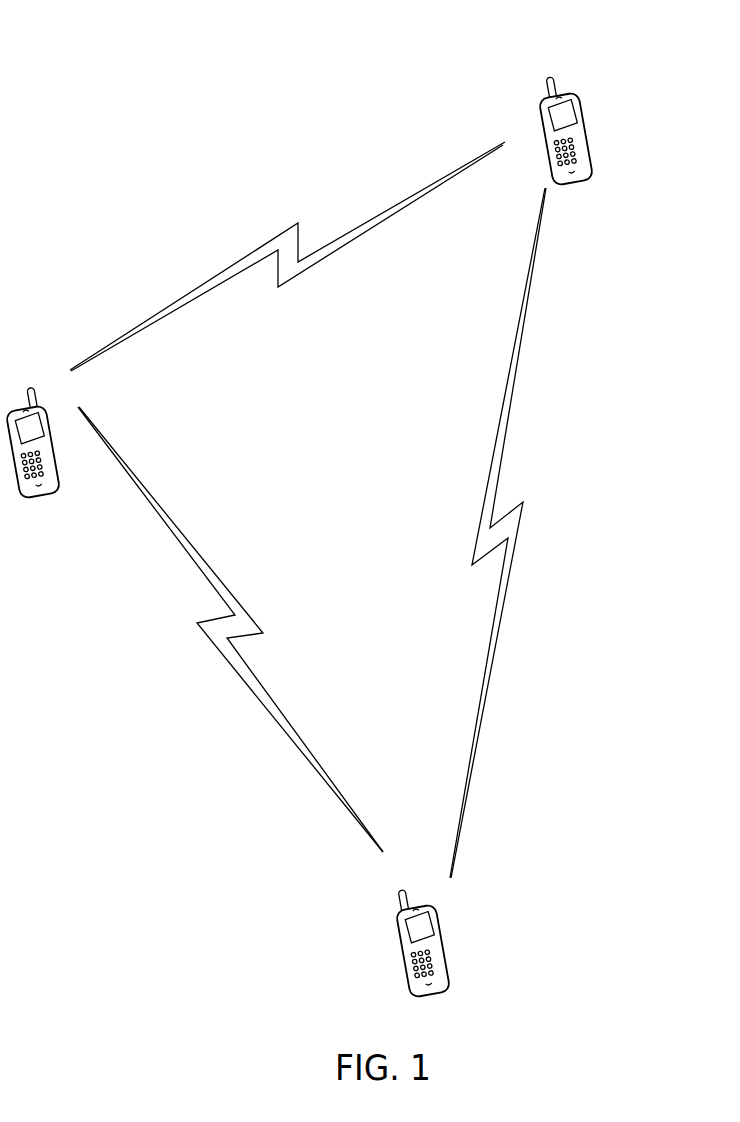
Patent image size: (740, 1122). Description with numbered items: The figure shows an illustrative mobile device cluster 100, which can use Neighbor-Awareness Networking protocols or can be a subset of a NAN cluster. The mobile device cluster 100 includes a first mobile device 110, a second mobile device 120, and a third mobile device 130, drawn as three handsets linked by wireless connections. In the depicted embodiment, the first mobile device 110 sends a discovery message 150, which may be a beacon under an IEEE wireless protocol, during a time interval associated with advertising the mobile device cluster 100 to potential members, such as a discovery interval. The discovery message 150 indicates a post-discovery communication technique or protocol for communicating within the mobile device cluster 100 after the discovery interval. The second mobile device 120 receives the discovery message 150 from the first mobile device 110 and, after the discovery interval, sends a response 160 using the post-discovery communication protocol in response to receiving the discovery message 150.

The mobile device cluster 100 is at (101, 50).
The first mobile device 110 is at (22, 494).
The second mobile device 120 is at (430, 910).
The third mobile device 130 is at (580, 103).
The discovery message 150 is at (122, 344).
The response 160 is at (131, 471).